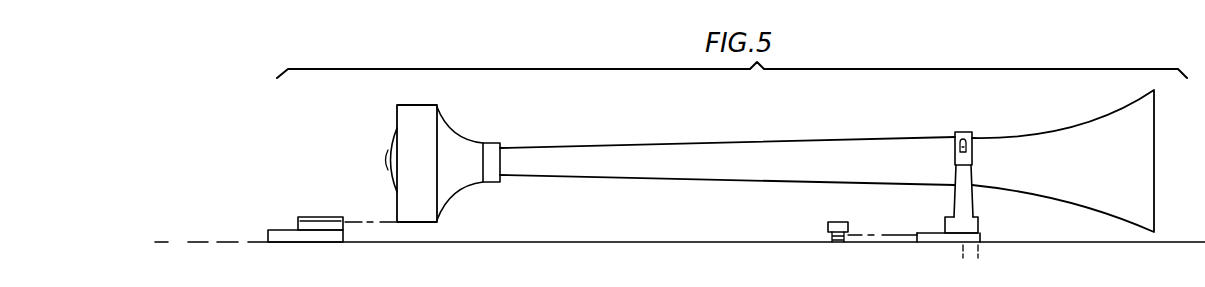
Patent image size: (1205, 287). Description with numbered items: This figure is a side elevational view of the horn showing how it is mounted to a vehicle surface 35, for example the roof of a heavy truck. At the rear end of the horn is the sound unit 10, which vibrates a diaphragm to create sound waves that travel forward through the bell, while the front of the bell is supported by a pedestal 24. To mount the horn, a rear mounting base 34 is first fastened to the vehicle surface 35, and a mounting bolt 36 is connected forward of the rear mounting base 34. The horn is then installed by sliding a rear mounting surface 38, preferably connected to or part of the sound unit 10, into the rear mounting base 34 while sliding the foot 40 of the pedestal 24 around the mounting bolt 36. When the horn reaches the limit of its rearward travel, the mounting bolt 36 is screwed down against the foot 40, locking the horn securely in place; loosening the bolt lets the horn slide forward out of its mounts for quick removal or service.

The sound unit 10 is at (422, 104).
The pedestal 24 is at (954, 208).
The rear mounting base 34 is at (292, 230).
The vehicle surface 35 is at (716, 217).
The mounting bolt 36 is at (840, 222).
The rear mounting surface 38 is at (437, 218).
The foot 40 is at (978, 240).